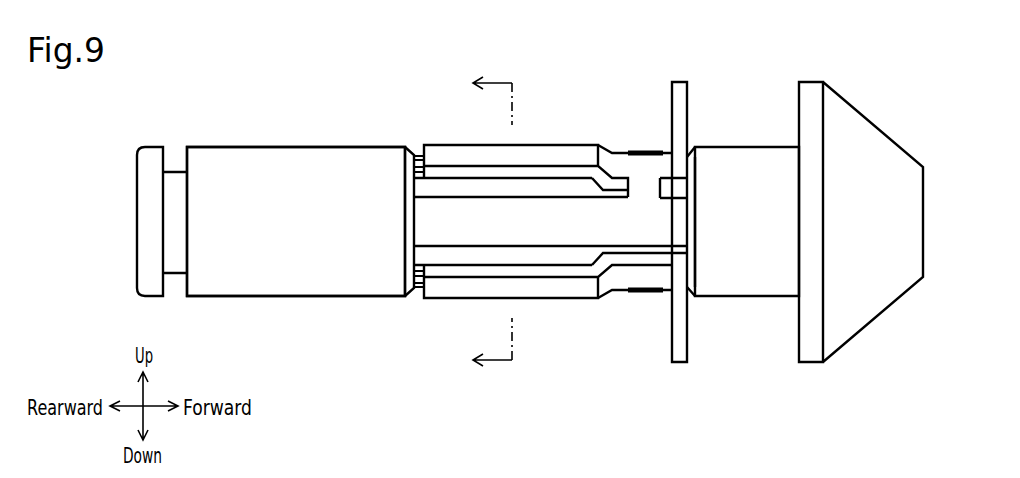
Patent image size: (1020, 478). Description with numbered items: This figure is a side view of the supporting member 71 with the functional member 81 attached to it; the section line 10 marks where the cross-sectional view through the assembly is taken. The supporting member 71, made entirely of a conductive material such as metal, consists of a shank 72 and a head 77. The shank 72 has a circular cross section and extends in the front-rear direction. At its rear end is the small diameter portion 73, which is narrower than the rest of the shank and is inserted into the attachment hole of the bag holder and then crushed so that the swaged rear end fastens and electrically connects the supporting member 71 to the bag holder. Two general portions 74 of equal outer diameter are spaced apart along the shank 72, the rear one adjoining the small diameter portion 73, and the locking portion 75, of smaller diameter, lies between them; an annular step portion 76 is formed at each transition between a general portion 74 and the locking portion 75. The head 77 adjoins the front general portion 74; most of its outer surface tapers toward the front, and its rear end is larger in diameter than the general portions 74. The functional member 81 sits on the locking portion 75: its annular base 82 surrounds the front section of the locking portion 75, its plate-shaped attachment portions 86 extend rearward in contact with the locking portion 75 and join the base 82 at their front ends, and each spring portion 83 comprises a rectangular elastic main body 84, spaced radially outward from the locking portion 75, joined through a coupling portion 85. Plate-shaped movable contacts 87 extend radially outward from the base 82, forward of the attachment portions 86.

The section line indicator 10 is at (479, 221).
The supporting member 71 is at (296, 191).
The shank 72 is at (227, 163).
The small diameter portion 73 is at (175, 262).
The general portions 74 is at (283, 275).
The locking portion 75 is at (450, 185).
The step portions 76 is at (413, 153).
The head 77 is at (870, 138).
The functional member 81 is at (698, 221).
The base 82 is at (652, 183).
The spring portions 83 is at (623, 95).
The elastic main body 84 is at (543, 157).
The coupling portion 85 is at (612, 152).
The attachment portions 86 is at (423, 220).
The movable contacts 87 is at (678, 92).